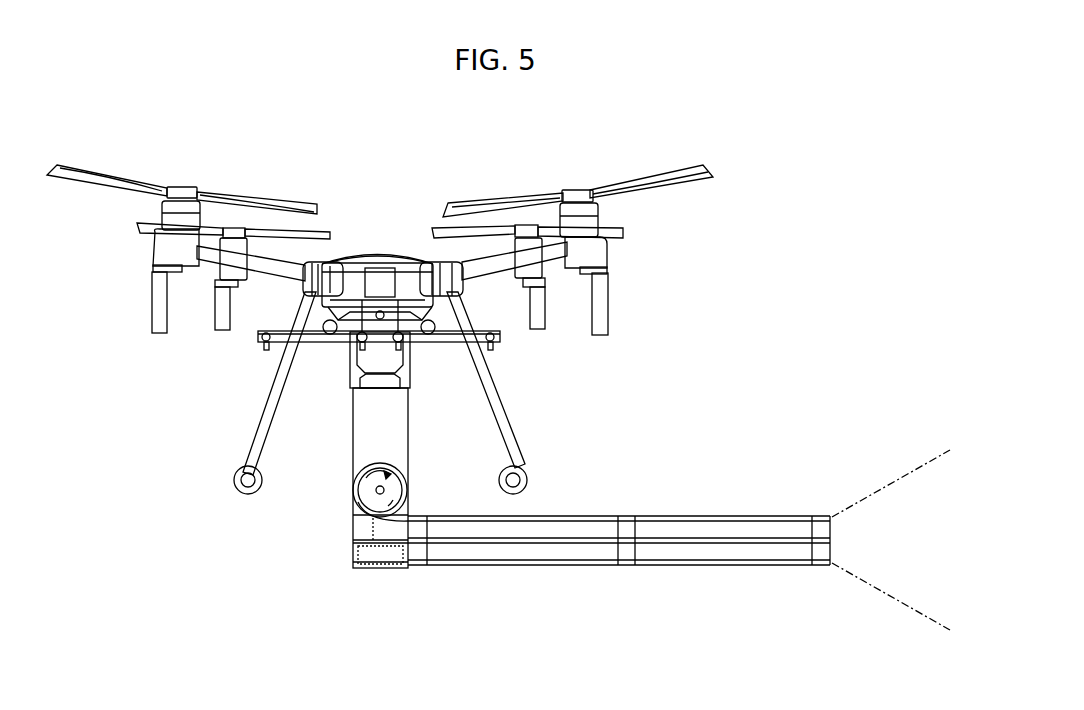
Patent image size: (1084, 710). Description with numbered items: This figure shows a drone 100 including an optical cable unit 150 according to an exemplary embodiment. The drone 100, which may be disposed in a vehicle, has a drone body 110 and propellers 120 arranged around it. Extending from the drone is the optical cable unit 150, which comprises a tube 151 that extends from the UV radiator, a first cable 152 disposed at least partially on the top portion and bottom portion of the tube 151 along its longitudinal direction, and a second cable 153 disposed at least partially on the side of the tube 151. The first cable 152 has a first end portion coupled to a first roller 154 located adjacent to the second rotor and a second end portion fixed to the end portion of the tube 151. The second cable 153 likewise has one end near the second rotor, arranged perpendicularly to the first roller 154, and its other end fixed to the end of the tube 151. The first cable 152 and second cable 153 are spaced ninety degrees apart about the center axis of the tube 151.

The drone 100 is at (261, 139).
The drone body 110 is at (378, 253).
The propeller 120 is at (668, 178).
The optical cable unit 150 is at (751, 503).
The tube 151 is at (662, 551).
The first cable 152 is at (655, 517).
The second cable 153 is at (681, 543).
The first roller 154 is at (352, 489).